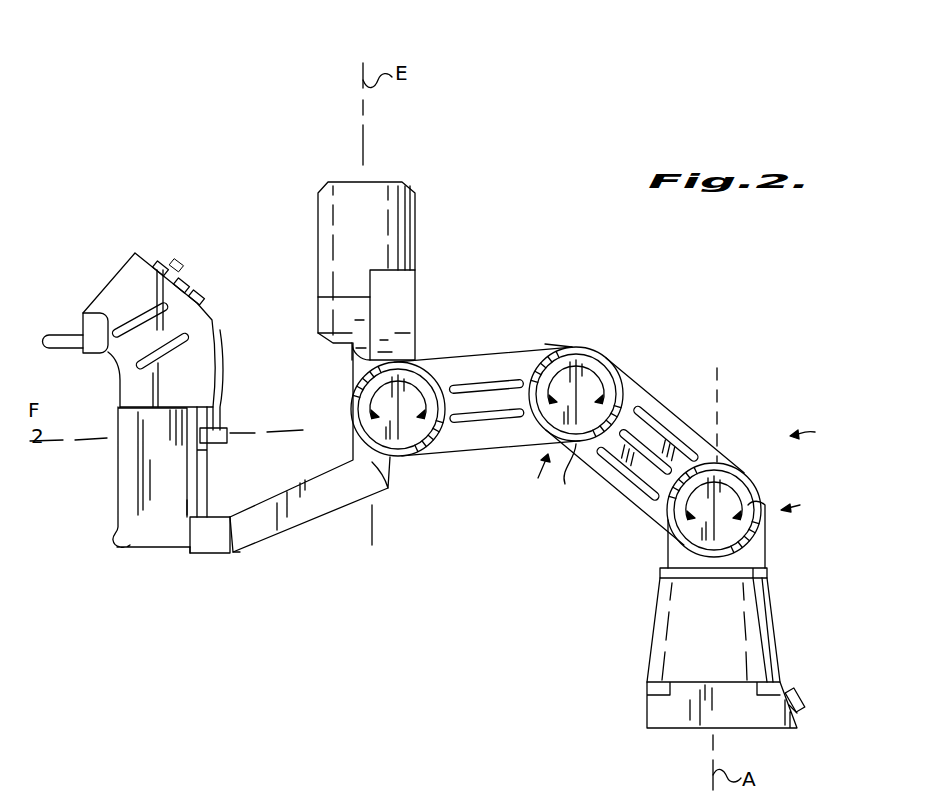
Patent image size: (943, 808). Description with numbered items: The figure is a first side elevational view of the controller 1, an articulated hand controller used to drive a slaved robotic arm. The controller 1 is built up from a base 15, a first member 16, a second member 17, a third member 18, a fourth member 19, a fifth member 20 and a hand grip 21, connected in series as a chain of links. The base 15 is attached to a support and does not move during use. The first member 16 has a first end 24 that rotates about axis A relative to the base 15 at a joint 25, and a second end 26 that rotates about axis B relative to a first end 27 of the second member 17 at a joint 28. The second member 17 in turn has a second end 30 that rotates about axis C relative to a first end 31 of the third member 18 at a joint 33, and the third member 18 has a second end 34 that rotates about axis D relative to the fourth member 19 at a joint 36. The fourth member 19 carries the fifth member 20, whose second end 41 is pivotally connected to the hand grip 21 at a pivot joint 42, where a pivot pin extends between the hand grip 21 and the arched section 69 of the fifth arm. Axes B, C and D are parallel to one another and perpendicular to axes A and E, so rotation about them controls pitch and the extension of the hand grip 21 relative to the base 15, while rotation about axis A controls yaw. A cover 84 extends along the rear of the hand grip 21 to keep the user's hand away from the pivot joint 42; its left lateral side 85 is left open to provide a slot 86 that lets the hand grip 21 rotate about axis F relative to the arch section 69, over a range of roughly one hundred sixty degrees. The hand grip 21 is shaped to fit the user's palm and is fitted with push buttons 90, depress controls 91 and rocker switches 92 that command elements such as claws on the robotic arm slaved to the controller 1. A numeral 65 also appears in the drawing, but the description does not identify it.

The controller 1 is at (809, 431).
The base 15 is at (647, 707).
The first member 16 is at (770, 597).
The second member 17 is at (636, 507).
The third member 18 is at (466, 457).
The fourth member 19 is at (417, 293).
The fifth member 20 is at (297, 522).
The hand grip 21 is at (118, 485).
The first end of the first member 24 is at (782, 684).
The joint 25 is at (688, 530).
The second end of the first member 26 is at (765, 515).
The first end of the second member 27 is at (734, 465).
The joint 28 is at (686, 480).
The second end of the second member 30 is at (612, 368).
The first end of the third member 31 is at (568, 345).
The joint 33 is at (529, 477).
The second end of the third member 34 is at (395, 458).
The joint 36 is at (387, 411).
The second end of the fifth member 41 is at (207, 452).
The pivot joint 42 is at (222, 404).
The bracket edge 65 is at (257, 550).
The arched section 69 is at (190, 515).
The cover 84 is at (228, 518).
The left lateral side of the cover 85 is at (221, 340).
The slot 86 is at (186, 503).
The push buttons 90 is at (167, 263).
The depress controls 91 is at (55, 335).
The rocker switches 92 is at (187, 281).